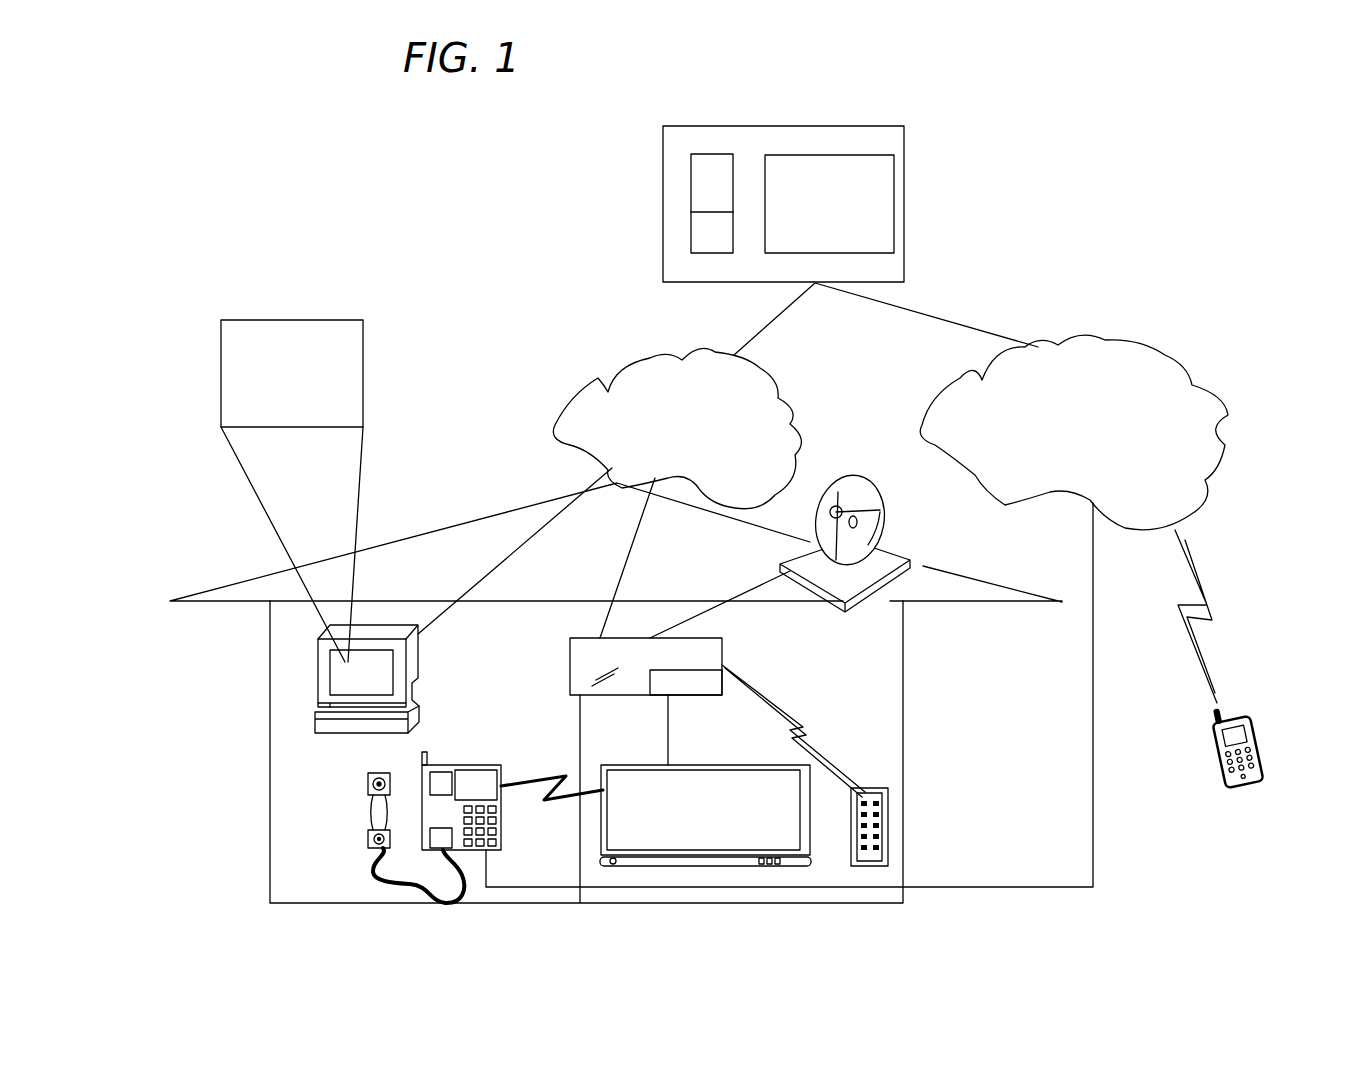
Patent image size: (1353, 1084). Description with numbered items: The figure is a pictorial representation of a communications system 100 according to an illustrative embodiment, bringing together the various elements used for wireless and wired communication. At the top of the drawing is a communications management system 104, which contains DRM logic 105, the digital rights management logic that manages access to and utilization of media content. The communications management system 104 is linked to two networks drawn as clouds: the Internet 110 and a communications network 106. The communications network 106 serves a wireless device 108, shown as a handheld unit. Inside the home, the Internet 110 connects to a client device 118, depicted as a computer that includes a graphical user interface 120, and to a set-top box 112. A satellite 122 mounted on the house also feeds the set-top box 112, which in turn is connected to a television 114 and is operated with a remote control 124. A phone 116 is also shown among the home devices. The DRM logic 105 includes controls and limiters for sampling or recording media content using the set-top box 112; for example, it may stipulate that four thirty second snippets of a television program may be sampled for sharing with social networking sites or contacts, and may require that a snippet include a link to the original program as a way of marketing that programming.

The communications system 100 is at (389, 177).
The communications management system 104 is at (889, 140).
The DRM logic 105 is at (787, 185).
The communications network 106 is at (1094, 454).
The wireless device 108 is at (1226, 752).
The Internet 110 is at (697, 454).
The set-top box 112 is at (712, 653).
The television 114 is at (790, 785).
The phone 116 is at (385, 815).
The client device 118 is at (327, 700).
The graphical user interface 120 is at (277, 423).
The satellite 122 is at (880, 545).
The remote control 124 is at (880, 816).